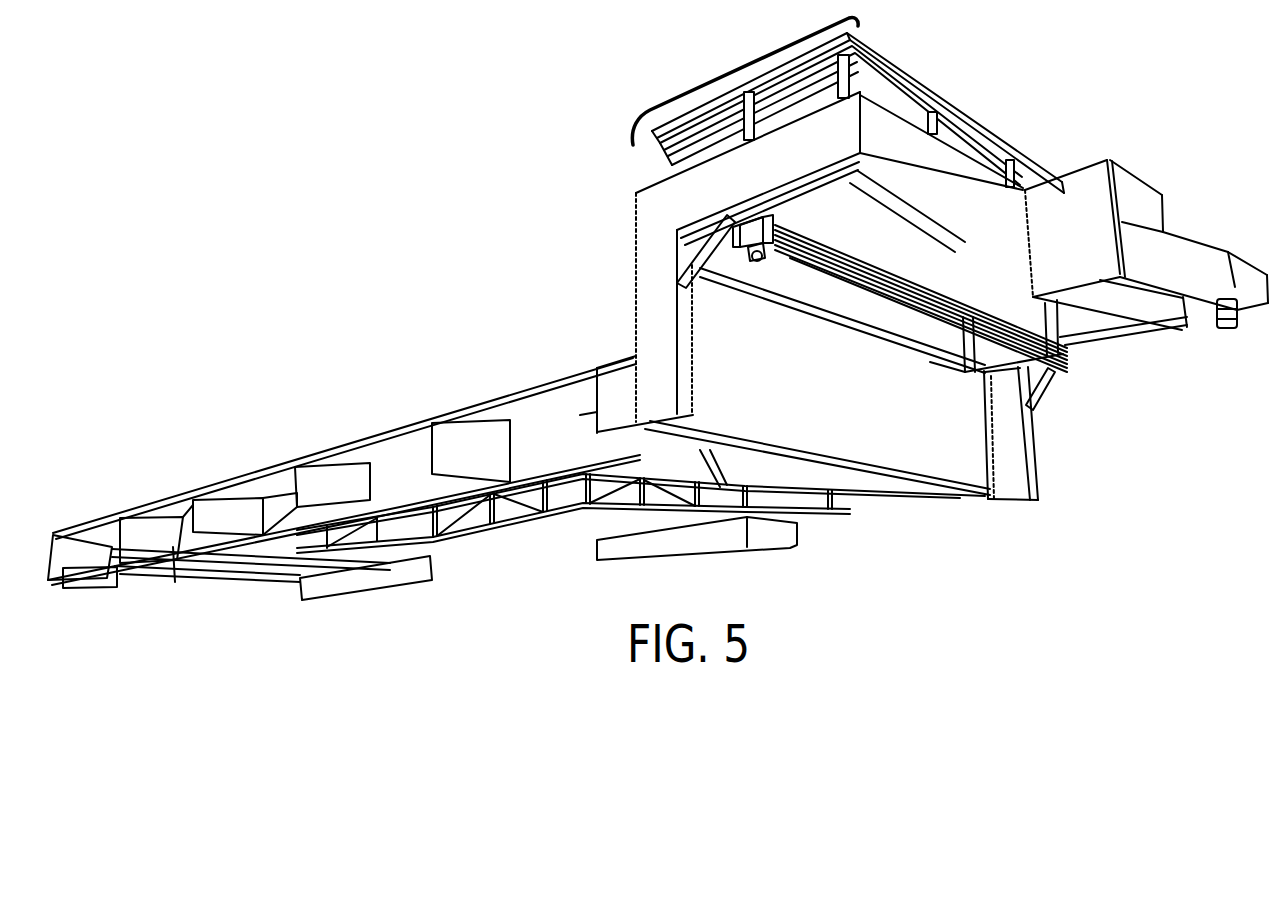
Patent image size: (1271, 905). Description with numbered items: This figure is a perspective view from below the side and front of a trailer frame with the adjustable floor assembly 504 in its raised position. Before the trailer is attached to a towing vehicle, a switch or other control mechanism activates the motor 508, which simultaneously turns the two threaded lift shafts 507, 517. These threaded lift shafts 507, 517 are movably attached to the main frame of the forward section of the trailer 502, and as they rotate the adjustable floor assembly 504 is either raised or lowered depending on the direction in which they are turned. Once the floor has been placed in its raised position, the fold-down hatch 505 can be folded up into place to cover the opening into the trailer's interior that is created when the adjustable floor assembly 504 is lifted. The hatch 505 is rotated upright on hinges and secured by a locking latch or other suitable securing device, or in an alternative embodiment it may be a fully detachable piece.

The main frame of the forward section of the trailer 502 is at (658, 201).
The adjustable floor assembly 504 is at (723, 73).
The fold-down hatch 505 is at (920, 403).
The threaded lift shaft 507 is at (742, 135).
The motor 508 is at (745, 240).
The threaded lift shaft 517 is at (1060, 328).